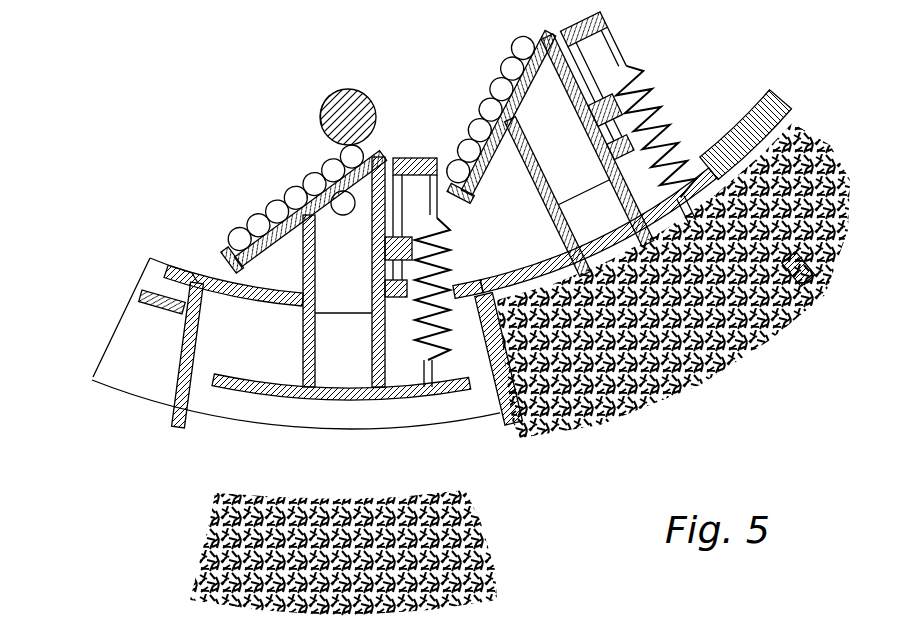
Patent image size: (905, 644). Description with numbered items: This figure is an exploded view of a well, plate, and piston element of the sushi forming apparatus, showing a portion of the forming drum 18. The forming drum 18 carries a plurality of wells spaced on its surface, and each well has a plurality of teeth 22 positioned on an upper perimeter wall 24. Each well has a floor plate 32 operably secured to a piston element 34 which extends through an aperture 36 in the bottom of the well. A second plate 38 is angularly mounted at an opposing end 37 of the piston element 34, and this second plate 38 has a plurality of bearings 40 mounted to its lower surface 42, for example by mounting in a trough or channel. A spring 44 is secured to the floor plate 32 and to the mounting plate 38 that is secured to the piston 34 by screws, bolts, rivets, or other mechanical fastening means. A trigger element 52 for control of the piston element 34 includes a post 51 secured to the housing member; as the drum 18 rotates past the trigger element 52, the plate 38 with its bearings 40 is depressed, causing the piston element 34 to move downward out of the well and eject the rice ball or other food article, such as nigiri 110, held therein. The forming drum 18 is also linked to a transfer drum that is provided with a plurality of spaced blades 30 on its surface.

The forming drum 18 is at (118, 280).
The teeth 22 is at (173, 427).
The upper perimeter wall 24 is at (150, 402).
The blades 30 is at (350, 418).
The floor plate 32 is at (292, 400).
The piston element 34 is at (560, 67).
The aperture 36 is at (340, 304).
The opposing end 37 is at (376, 157).
The second plate 38 is at (522, 88).
The bearings 40 is at (267, 214).
The lower surface 42 is at (333, 170).
The spring 44 is at (452, 240).
The post 51 is at (362, 92).
The trigger element 52 is at (323, 103).
The nigiri 110 is at (490, 568).